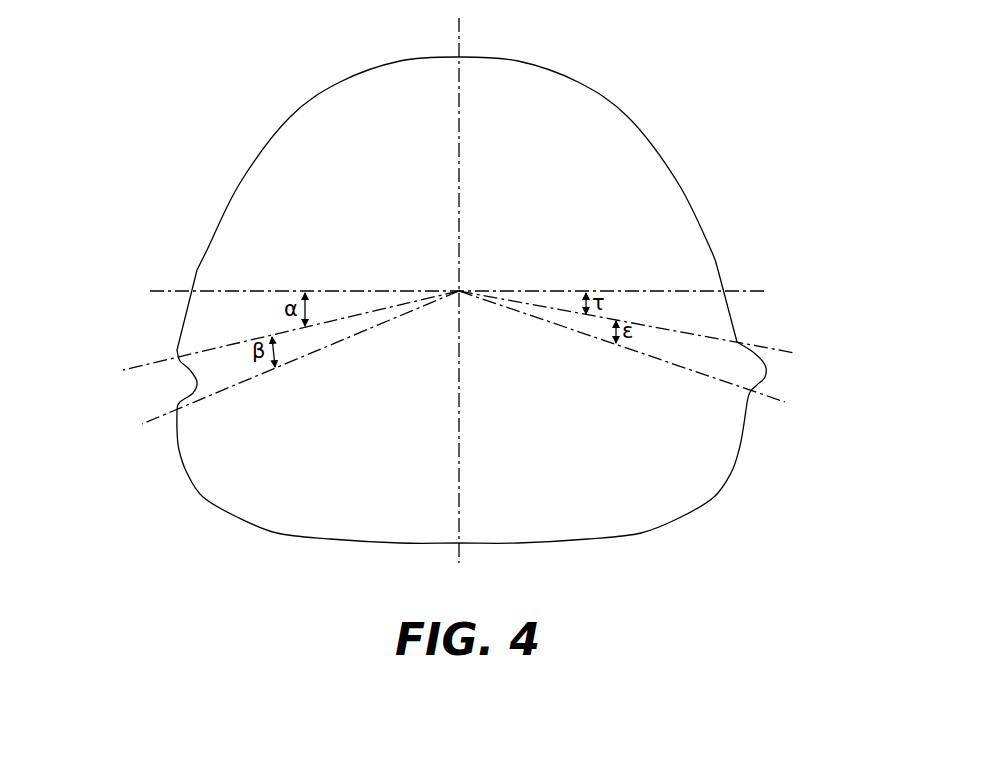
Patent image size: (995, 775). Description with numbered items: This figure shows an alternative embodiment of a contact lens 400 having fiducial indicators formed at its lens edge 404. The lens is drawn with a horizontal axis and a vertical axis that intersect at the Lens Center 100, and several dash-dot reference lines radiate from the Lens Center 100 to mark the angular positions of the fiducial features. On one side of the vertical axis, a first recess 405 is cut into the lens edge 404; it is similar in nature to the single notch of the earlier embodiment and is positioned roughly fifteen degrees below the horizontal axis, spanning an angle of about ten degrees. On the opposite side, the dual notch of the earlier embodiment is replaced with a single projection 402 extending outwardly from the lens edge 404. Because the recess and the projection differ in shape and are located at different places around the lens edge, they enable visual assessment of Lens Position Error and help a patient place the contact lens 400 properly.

The Lens Center 100 is at (459, 291).
The contact lens 400 is at (758, 196).
The single projection 402 is at (766, 366).
The lens edge 404 is at (670, 160).
The first recess 405 is at (183, 382).